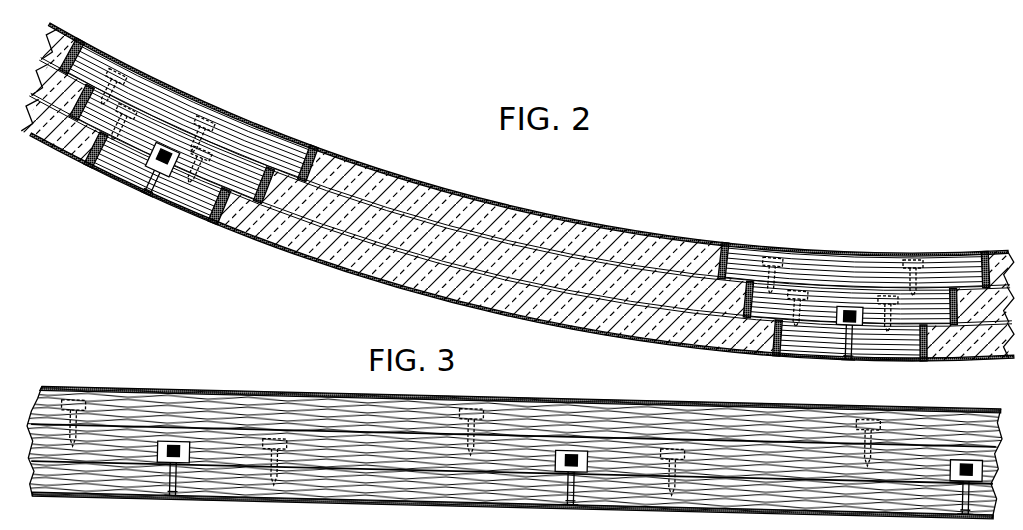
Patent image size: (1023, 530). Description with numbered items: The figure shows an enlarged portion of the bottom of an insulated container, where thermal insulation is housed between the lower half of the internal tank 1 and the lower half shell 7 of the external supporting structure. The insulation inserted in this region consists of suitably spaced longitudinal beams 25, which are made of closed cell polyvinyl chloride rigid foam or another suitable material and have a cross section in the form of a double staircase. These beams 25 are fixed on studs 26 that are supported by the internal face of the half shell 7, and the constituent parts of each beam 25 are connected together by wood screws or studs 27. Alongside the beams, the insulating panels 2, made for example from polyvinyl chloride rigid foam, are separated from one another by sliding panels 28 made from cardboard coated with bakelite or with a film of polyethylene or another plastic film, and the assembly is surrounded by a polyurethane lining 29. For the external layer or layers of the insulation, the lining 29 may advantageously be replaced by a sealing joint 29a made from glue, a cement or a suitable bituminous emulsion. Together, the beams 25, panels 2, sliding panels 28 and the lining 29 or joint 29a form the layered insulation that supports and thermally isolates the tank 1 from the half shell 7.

In FIG. 2, the internal tank 1 is at (205, 100).
In FIG. 3, the internal tank 1 is at (514, 437).
In FIG. 2, the insulating panels 2 is at (347, 168).
In FIG. 2, the lower half shell 7 is at (307, 260).
In FIG. 2, the longitudinal beams 25 is at (213, 130).
In FIG. 3, the longitudinal beams 25 is at (514, 437).
In FIG. 2, the studs 26 is at (157, 157).
In FIG. 3, the studs 26 is at (557, 485).
In FIG. 2, the wood screws or studs 27 is at (130, 100).
In FIG. 3, the wood screws or studs 27 is at (486, 443).
In FIG. 2, the sliding panels 28 is at (408, 250).
In FIG. 2, the polyurethane lining 29 is at (265, 170).
In FIG. 2, the sealing joint 29a is at (215, 220).